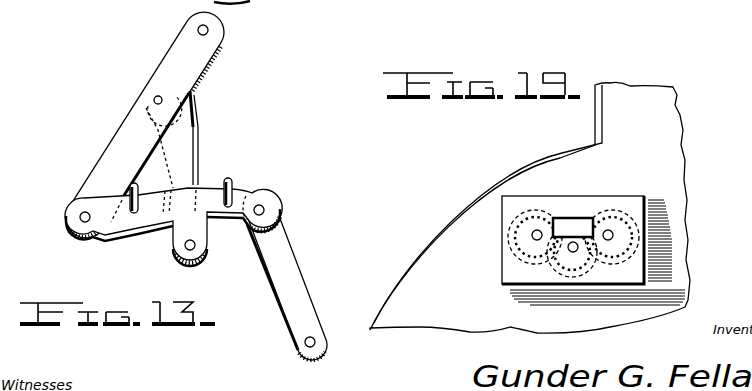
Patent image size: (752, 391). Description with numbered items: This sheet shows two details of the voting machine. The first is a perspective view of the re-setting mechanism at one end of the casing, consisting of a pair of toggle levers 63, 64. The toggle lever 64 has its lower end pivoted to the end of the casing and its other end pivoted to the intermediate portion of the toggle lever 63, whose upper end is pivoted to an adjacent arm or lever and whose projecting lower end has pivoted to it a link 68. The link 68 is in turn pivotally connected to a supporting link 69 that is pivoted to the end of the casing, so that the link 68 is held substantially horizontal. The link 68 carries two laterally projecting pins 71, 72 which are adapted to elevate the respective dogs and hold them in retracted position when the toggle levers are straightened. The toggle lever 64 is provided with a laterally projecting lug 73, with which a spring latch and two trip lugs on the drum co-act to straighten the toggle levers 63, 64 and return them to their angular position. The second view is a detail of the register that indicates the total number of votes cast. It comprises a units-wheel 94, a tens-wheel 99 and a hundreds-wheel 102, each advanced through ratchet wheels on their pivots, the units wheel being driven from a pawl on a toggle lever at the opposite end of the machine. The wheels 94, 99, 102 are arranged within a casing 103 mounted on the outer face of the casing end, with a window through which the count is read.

In FIG. 13, the toggle lever 63 is at (194, 62).
In FIG. 13, the toggle lever 64 is at (182, 180).
In FIG. 13, the link 68 is at (152, 228).
In FIG. 13, the supporting link 69 is at (297, 285).
In FIG. 13, the pin 71 is at (124, 197).
In FIG. 13, the pin 72 is at (232, 182).
In FIG. 13, the lug 73 is at (200, 119).
In FIG. 19, the units-wheel 94 is at (602, 217).
In FIG. 19, the tens-wheel 99 is at (577, 218).
In FIG. 19, the hundreds-wheel 102 is at (562, 217).
In FIG. 19, the casing 103 is at (577, 278).